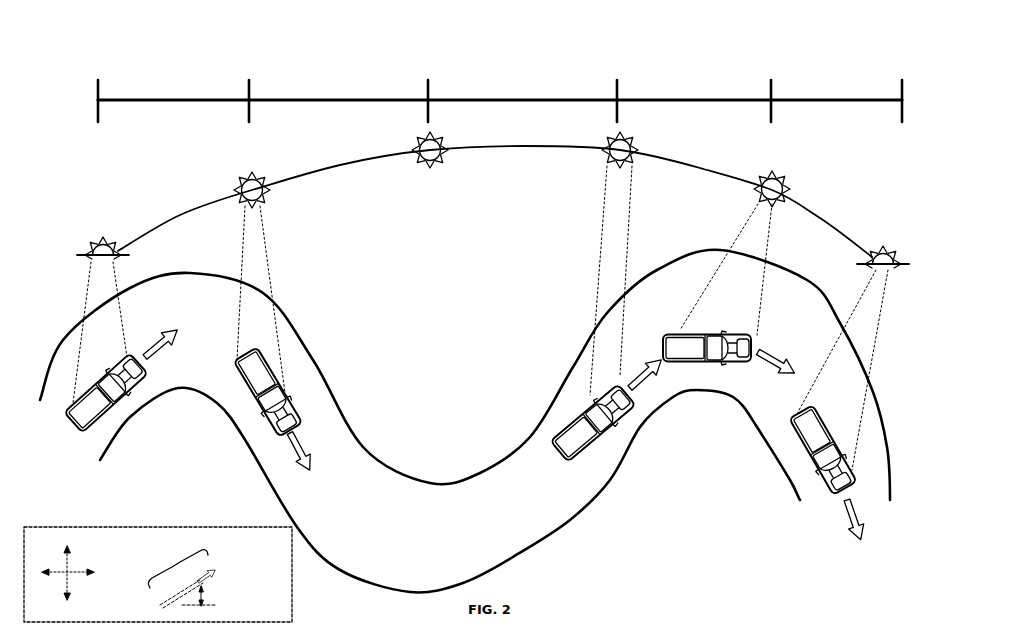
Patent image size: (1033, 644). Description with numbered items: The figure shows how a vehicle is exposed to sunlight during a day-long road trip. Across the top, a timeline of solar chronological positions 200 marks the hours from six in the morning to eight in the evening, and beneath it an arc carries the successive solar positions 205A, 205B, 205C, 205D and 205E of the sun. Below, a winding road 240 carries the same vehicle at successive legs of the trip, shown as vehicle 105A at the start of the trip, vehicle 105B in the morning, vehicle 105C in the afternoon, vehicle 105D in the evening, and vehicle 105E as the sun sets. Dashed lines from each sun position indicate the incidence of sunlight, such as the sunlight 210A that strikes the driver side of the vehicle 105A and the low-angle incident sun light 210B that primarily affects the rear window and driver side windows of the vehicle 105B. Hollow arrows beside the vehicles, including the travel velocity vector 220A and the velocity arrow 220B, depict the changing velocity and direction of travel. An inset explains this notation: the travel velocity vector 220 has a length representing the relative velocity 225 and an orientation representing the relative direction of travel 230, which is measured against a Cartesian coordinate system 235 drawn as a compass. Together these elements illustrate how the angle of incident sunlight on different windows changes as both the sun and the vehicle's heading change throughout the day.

The solar chronological positions 200 is at (78, 54).
The solar position 205A is at (104, 238).
The position of the sun 205B is at (257, 178).
The position of the sun 205C is at (608, 146).
The position of the sun 205D is at (760, 179).
The solar position 205E is at (883, 246).
The sunlight 210A is at (125, 323).
The incident sun light 210B is at (270, 293).
The vehicle 105A is at (120, 404).
The vehicle 105B is at (297, 412).
The vehicle 105C is at (593, 447).
The vehicle 105D is at (707, 362).
The vehicle 105E is at (838, 442).
The travel velocity vector 220A is at (159, 350).
The velocity arrow 220B is at (308, 452).
The travel velocity vector 220 is at (213, 570).
The relative velocity 225 is at (178, 578).
The relative direction of travel 230 is at (211, 603).
The Cartesian coordinate system 235 is at (70, 568).
The road 240 is at (585, 505).